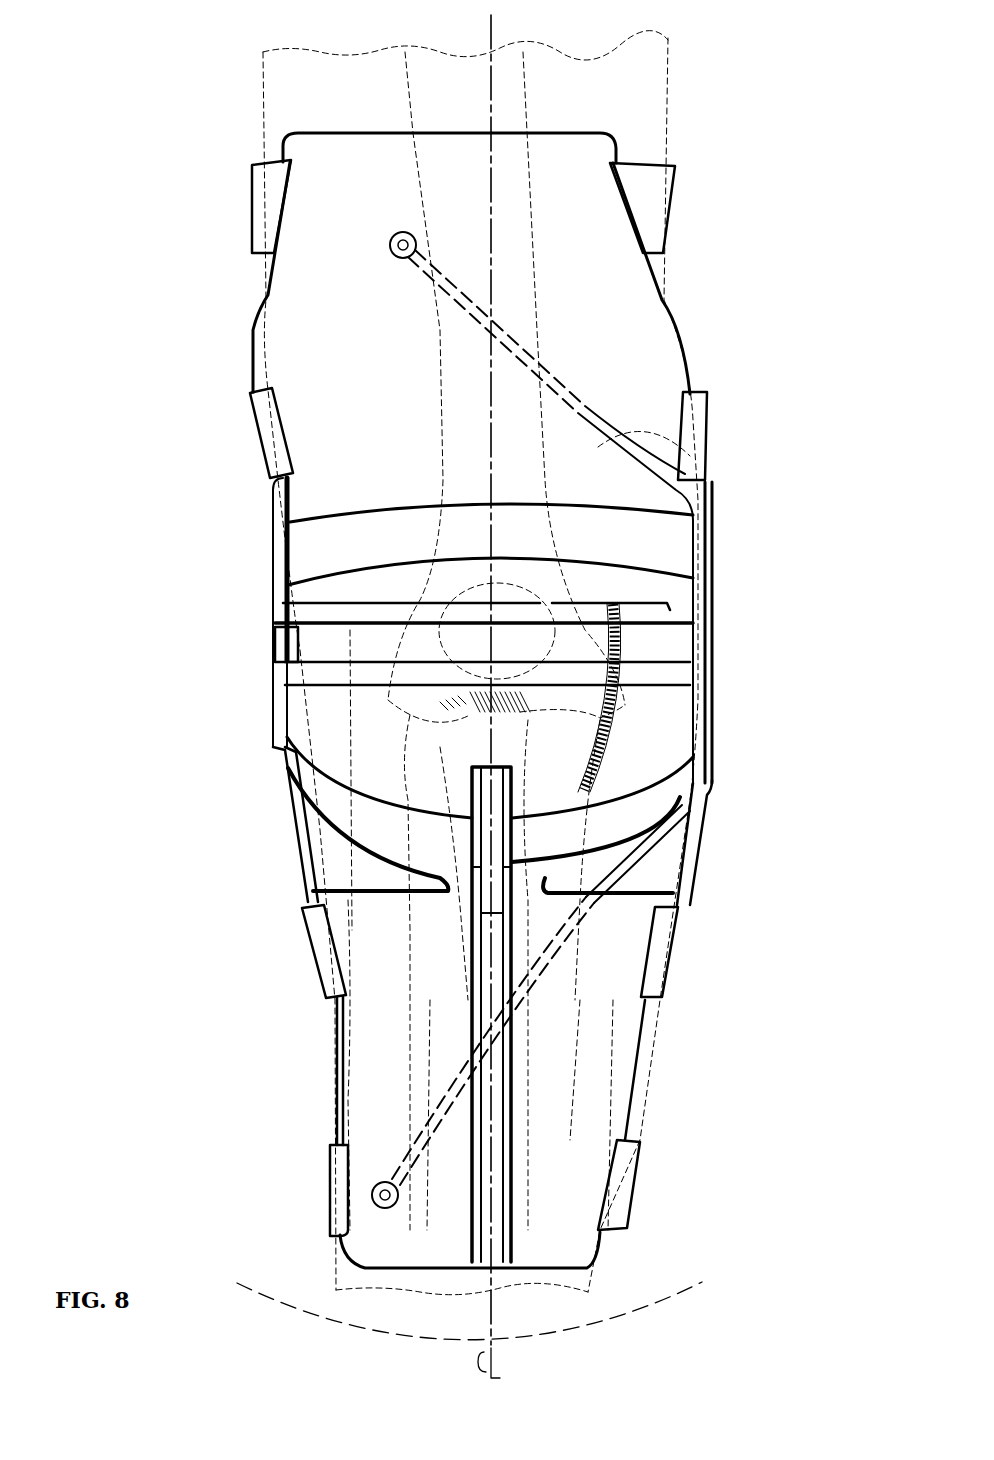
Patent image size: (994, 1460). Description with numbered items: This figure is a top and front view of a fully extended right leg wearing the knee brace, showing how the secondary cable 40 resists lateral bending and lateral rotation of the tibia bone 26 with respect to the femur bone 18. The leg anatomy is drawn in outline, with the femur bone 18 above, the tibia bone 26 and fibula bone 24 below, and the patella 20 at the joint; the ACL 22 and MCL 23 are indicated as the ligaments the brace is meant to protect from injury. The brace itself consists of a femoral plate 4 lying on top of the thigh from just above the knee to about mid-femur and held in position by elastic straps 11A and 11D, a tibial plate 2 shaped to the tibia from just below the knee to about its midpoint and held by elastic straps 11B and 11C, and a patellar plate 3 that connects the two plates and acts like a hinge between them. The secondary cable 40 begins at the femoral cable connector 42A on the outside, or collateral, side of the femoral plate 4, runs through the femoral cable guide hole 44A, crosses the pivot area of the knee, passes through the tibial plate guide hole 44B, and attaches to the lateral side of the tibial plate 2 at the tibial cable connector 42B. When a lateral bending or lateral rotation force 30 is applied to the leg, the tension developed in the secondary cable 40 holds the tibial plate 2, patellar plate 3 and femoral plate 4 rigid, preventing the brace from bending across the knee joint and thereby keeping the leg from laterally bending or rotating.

The tibial plate 2 is at (362, 1063).
The patellar plate 3 is at (650, 642).
The femoral plate 4 is at (600, 300).
The femur bone 18 is at (523, 50).
The elastic strap 11A is at (256, 190).
The elastic strap 11B is at (318, 950).
The elastic strap 11C is at (330, 1215).
The elastic strap 11D is at (265, 428).
The patella 20 is at (275, 648).
The ACL 22 is at (285, 710).
The MCL 23 is at (650, 712).
The fibula bone 24 is at (407, 1027).
The tibia bone 26 is at (530, 1100).
The lateral rotation force 30 is at (296, 1310).
The secondary cable 40 is at (668, 440).
The femoral cable connector 42A is at (390, 244).
The tibial cable connector 42B is at (381, 1185).
The femoral cable guide hole 44A is at (578, 412).
The tibial plate guide hole 44B is at (600, 943).